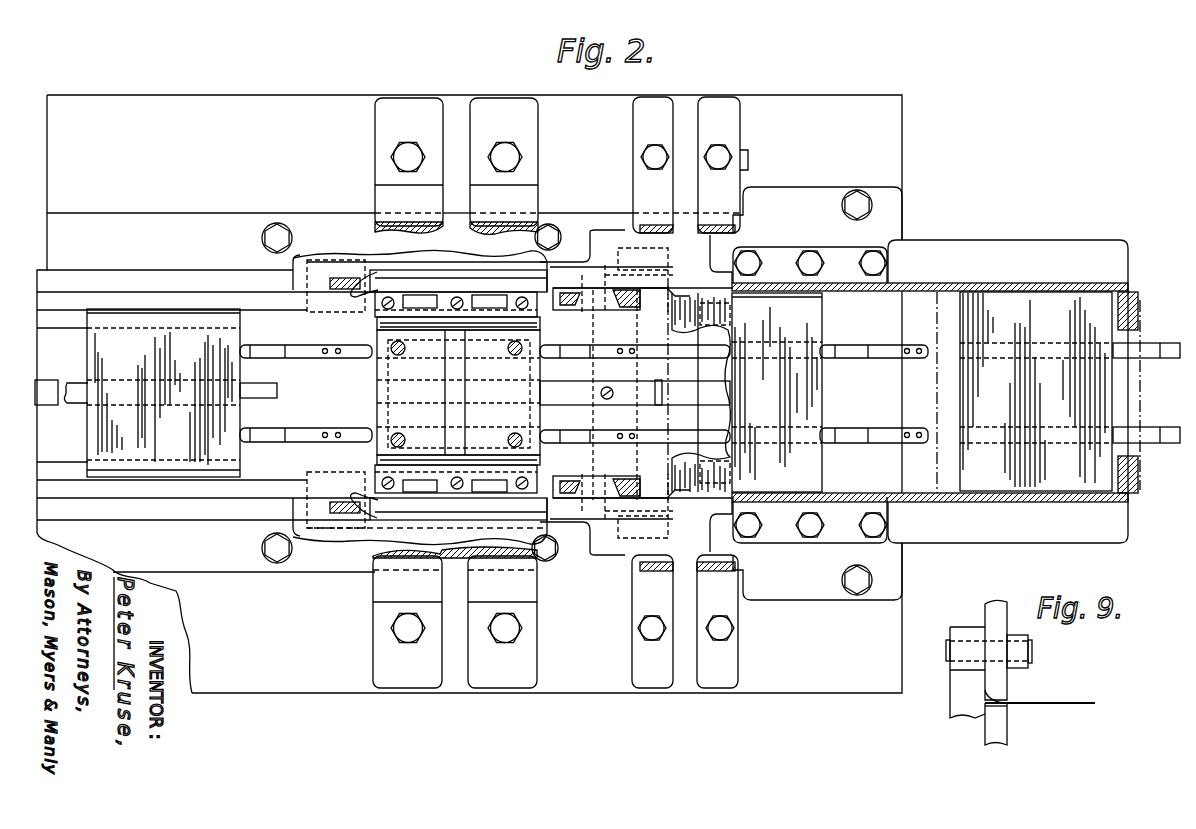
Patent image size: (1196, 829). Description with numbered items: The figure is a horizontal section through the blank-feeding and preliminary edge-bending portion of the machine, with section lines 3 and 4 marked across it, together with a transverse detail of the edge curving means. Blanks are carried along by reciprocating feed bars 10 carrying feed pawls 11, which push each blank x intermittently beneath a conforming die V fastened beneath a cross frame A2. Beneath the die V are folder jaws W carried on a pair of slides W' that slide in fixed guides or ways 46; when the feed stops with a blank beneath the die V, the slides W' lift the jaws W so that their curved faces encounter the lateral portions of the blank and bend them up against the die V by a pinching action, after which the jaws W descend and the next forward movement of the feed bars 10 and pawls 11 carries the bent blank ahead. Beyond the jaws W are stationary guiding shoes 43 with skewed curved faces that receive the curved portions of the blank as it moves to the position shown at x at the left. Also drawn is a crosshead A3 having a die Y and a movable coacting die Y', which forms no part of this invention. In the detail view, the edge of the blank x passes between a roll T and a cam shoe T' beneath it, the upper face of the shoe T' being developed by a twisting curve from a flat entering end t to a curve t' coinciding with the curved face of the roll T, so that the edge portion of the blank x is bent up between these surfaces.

In FIG. 2, the section line 3- 3 is at (545, 93).
In FIG. 2, the section line 4- 4 is at (409, 93).
In FIG. 2, the cross frame A2 is at (378, 172).
In FIG. 2, the crosshead A3 is at (690, 392).
In FIG. 2, the folder jaws W is at (767, 395).
In FIG. 2, the slides W' is at (440, 380).
In FIG. 2, the fixed guides or ways 46 is at (357, 287).
In FIG. 2, the stationary guiding shoes 43 is at (320, 478).
In FIG. 2, the die Y is at (457, 451).
In FIG. 2, the movable coacting die Y' is at (457, 340).
In FIG. 2, the conforming die V is at (458, 392).
In FIG. 2, the feed pawls 11 is at (292, 437).
In FIG. 2, the reciprocating feed bars 10 is at (877, 346).
In FIG. 2, the roll T is at (646, 392).
In FIG. 9, the roll T is at (982, 666).
In FIG. 2, the cam shoe T' is at (639, 423).
In FIG. 9, the cam shoe T' is at (978, 690).
In FIG. 2, the blank x is at (613, 392).
In FIG. 9, the blank x is at (1040, 691).
In FIG. 9, the flat entering end t is at (1010, 725).
In FIG. 9, the curve t' is at (961, 701).